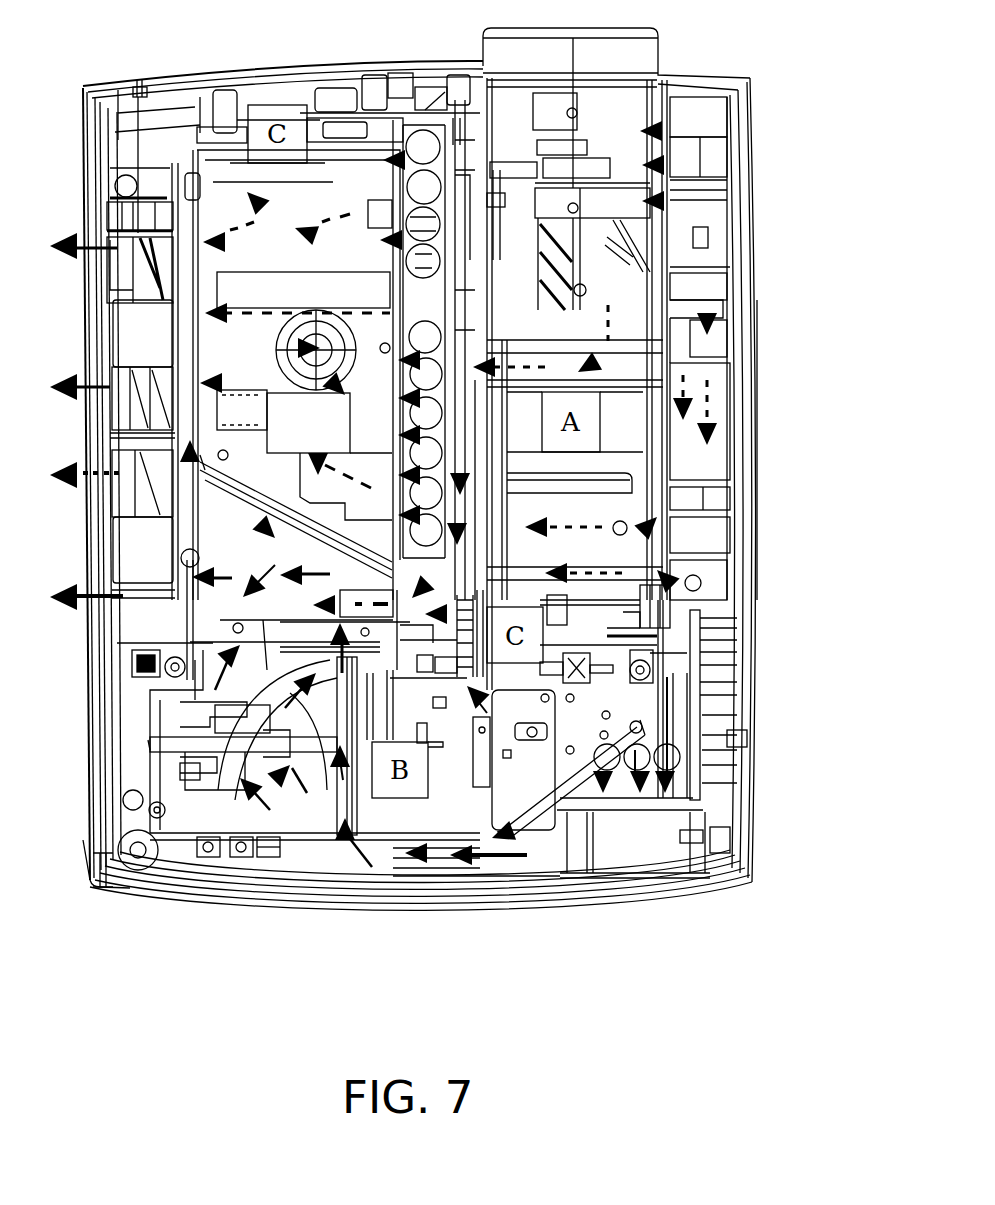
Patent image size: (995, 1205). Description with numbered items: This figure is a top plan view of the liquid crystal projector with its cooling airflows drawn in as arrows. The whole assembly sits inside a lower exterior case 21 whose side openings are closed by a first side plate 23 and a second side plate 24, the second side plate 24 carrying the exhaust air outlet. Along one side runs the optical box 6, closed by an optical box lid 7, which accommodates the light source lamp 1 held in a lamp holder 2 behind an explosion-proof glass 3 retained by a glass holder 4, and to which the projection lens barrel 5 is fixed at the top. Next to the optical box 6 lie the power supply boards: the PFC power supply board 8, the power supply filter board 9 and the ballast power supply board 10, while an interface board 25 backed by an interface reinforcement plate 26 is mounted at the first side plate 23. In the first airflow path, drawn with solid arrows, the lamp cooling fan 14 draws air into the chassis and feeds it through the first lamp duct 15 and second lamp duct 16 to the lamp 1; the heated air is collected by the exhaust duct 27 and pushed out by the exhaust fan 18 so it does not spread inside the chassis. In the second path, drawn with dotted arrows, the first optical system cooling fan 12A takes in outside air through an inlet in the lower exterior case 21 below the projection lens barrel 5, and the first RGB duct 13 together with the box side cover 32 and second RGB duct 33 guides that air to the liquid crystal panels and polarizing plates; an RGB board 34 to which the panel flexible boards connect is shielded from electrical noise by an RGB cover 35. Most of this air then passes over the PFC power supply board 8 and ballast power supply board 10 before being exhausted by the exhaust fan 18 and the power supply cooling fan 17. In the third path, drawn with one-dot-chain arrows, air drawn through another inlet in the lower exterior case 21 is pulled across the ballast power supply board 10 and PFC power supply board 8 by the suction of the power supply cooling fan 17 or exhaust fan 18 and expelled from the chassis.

The light source lamp 1 is at (213, 790).
The lamp holder 2 is at (240, 808).
The explosion-proof glass 3 is at (358, 835).
The glass holder 4 is at (345, 835).
The projection lens barrel 5 is at (610, 67).
The optical box 6 is at (690, 621).
The optical box lid 7 is at (580, 725).
The PFC power supply board 8 is at (157, 82).
The power supply filter board 9 is at (660, 775).
The ballast power supply board 10 is at (227, 180).
The first optical system cooling fan 12A is at (703, 177).
The first RGB duct 13 is at (673, 267).
The lamp cooling fan 14 is at (613, 835).
The first lamp duct 15 is at (455, 840).
The second lamp duct 16 is at (510, 840).
The power supply cooling fan 17 is at (122, 327).
The exhaust fan 18 is at (123, 540).
The lower exterior case 21 is at (280, 56).
The first side plate 23 is at (755, 445).
The second side plate 24 is at (95, 815).
The interface board 25 is at (693, 683).
The interface reinforcement plate 26 is at (700, 582).
The exhaust duct 27 is at (200, 478).
The box side cover 32 is at (720, 410).
The second RGB duct 33 is at (727, 362).
The RGB board 34 is at (610, 515).
The RGB cover 35 is at (665, 550).